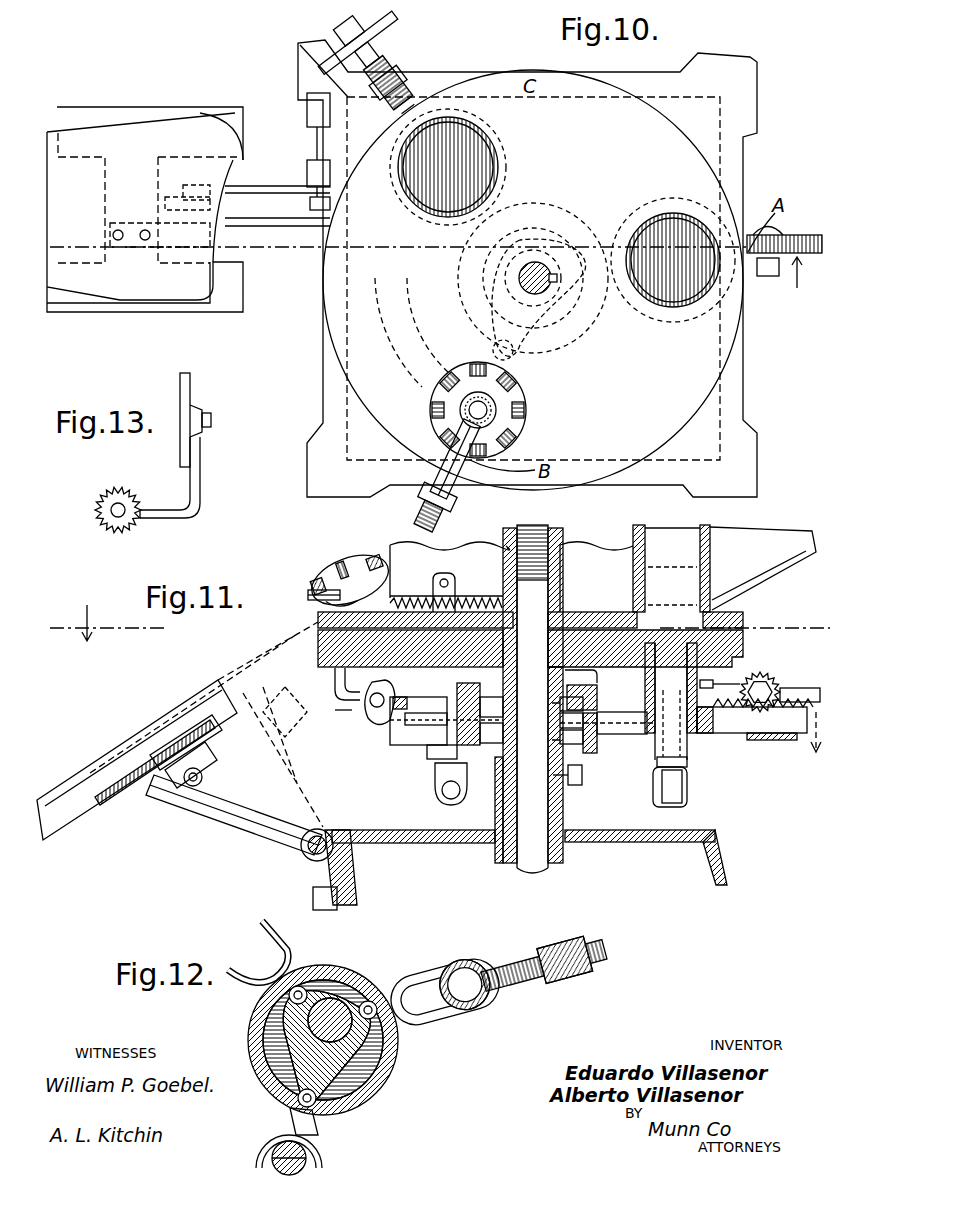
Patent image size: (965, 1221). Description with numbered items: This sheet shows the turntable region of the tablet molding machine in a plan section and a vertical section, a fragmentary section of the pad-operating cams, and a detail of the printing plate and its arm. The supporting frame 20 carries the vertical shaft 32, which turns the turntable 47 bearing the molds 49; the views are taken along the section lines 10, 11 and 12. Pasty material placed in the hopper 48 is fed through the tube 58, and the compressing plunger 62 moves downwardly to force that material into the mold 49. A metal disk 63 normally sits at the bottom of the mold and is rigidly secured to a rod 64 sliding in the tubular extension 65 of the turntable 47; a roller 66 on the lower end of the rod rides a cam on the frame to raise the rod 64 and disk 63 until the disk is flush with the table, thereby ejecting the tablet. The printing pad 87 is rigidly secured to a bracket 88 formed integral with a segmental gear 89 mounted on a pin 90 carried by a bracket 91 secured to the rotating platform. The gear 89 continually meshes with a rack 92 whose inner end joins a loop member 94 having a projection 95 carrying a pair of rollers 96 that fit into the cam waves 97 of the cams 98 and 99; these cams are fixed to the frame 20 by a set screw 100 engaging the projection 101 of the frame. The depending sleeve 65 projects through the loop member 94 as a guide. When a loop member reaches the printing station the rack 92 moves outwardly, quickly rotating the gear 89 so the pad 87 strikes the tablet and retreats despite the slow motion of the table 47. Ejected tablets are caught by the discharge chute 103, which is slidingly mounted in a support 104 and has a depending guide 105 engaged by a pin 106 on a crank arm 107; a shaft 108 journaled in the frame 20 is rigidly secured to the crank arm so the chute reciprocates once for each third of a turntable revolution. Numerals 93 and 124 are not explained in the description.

In FIG. 11, the section line 10— 10 is at (437, 622).
In FIG. 10, the section line 11— 11 is at (437, 256).
In FIG. 11, the section line 12— 12 is at (565, 741).
In FIG. 10, the supporting frame 20 is at (735, 403).
In FIG. 11, the supporting frame 20 is at (688, 832).
In FIG. 11, the vertical shaft 32 is at (537, 872).
In FIG. 10, the turntable 47 is at (700, 357).
In FIG. 11, the turntable 47 is at (745, 643).
In FIG. 11, the hopper 48 is at (778, 540).
In FIG. 10, the mold 49 is at (668, 305).
In FIG. 11, the tube 58 is at (633, 530).
In FIG. 11, the compressing plunger 62 is at (655, 553).
In FIG. 11, the metal disk 63 is at (671, 701).
In FIG. 11, the rod 64 is at (680, 765).
In FIG. 11, the tubular extension 65 is at (697, 735).
In FIG. 11, the roller 66 is at (682, 785).
In FIG. 10, the printing pad 87 is at (508, 417).
In FIG. 13, the printing pad 87 is at (185, 395).
In FIG. 11, the printing pad 87 is at (340, 565).
In FIG. 13, the bracket 88 is at (198, 483).
In FIG. 13, the segmental gear 89 is at (118, 525).
In FIG. 11, the shaft or pin 90 is at (368, 722).
In FIG. 11, the bracket 91 is at (425, 722).
In FIG. 11, the rack 92 is at (400, 710).
In FIG. 12, the rack 92 is at (522, 985).
In FIG. 12, the pivot pin 93 is at (325, 1143).
In FIG. 11, the loop member 94 is at (635, 734).
In FIG. 12, the loop member 94 is at (268, 1146).
In FIG. 12, the projection 95 is at (318, 1125).
In FIG. 11, the rollers 96 is at (575, 688).
In FIG. 12, the rollers 96 is at (355, 1100).
In FIG. 11, the cam waves 97 is at (590, 757).
In FIG. 12, the cam waves 97 is at (372, 1062).
In FIG. 11, the cam 98 is at (597, 700).
In FIG. 11, the cam 99 is at (598, 752).
In FIG. 12, the cam 99 is at (365, 985).
In FIG. 11, the set screw 100 is at (583, 783).
In FIG. 11, the projection 101 is at (565, 815).
In FIG. 11, the discharge chute 103 is at (70, 832).
In FIG. 11, the support 104 is at (140, 788).
In FIG. 11, the depending guide 105 is at (210, 758).
In FIG. 11, the pin 106 is at (190, 786).
In FIG. 10, the crank arm 107 is at (318, 190).
In FIG. 11, the crank arm 107 is at (237, 810).
In FIG. 10, the shaft 108 is at (318, 150).
In FIG. 11, the rod 124 is at (335, 582).